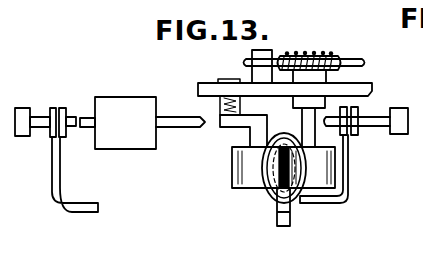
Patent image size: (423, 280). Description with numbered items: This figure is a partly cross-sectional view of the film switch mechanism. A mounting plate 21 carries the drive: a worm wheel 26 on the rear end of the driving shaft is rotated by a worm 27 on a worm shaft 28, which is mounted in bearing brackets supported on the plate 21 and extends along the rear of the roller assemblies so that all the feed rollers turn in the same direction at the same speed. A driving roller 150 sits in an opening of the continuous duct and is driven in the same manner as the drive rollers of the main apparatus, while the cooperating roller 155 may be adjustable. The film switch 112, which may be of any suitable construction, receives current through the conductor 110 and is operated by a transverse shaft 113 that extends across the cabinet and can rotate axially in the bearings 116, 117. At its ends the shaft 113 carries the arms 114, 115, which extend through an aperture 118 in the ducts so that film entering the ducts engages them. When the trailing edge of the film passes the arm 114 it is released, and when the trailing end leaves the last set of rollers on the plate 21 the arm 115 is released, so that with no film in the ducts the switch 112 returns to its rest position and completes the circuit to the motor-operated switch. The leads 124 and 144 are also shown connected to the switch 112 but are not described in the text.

The plate 21 is at (364, 83).
The worm wheel 26 is at (334, 60).
The worm 27 is at (316, 52).
The worm shaft 28 is at (358, 59).
The conductor 110 is at (146, 106).
The film switch 112 is at (125, 123).
The transverse shaft 113 is at (178, 127).
The arm 114 is at (66, 213).
The arm 115 is at (350, 202).
The bearing 116 is at (22, 106).
The bearing 117 is at (399, 118).
The aperture 118 is at (274, 204).
The lead 124 is at (117, 105).
The lead 144 is at (146, 142).
The driving roller 150 is at (322, 177).
The roller 155 is at (245, 175).